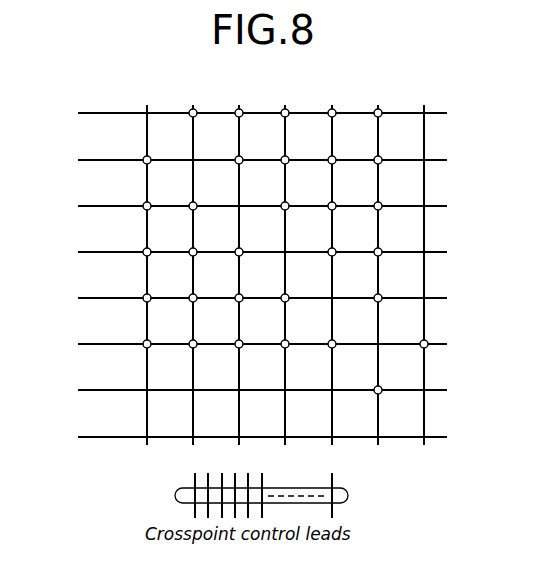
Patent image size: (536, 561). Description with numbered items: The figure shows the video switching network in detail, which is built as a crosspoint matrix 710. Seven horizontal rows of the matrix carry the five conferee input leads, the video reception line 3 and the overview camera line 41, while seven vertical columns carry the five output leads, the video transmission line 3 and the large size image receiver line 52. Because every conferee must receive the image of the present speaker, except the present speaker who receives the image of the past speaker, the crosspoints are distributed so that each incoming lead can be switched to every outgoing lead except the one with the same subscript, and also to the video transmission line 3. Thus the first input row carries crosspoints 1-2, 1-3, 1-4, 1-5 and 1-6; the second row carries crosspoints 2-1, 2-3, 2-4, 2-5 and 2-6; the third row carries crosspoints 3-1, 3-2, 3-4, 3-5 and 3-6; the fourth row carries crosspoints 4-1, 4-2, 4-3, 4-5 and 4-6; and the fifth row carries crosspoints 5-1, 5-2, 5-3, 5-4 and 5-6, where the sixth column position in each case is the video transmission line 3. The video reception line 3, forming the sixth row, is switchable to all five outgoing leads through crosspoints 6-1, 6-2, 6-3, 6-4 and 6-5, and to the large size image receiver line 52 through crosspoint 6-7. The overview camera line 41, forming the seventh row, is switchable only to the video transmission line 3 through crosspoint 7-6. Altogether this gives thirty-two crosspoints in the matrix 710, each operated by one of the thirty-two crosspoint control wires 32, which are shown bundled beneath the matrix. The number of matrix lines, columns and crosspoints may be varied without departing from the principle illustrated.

The crosspoint matrix 710 is at (414, 272).
The video reception and transmission line 3 is at (247, 261).
The overview camera line 41 is at (244, 390).
The large size image receiver line 52 is at (424, 261).
The crosspoint control wires 32 is at (348, 494).
The crosspoint 1-2 is at (205, 123).
The crosspoint 1-3 is at (251, 123).
The crosspoint 1-4 is at (297, 123).
The crosspoint 1-5 is at (344, 123).
The crosspoint 1-6 is at (390, 123).
The crosspoint 2-1 is at (159, 170).
The crosspoint 2-3 is at (251, 170).
The crosspoint 2-4 is at (297, 170).
The crosspoint 2-5 is at (344, 170).
The crosspoint 2-6 is at (390, 170).
The crosspoint 3-1 is at (159, 216).
The crosspoint 3-2 is at (205, 216).
The crosspoint 3-4 is at (297, 216).
The crosspoint 3-5 is at (344, 216).
The crosspoint 3-6 is at (390, 216).
The crosspoint 4-1 is at (159, 262).
The crosspoint 4-2 is at (205, 262).
The crosspoint 4-3 is at (251, 262).
The crosspoint 4-5 is at (344, 262).
The crosspoint 4-6 is at (390, 262).
The crosspoint 5-1 is at (159, 308).
The crosspoint 5-2 is at (205, 308).
The crosspoint 5-3 is at (251, 308).
The crosspoint 5-4 is at (297, 308).
The crosspoint 5-6 is at (390, 308).
The crosspoint 6-1 is at (159, 354).
The crosspoint 6-2 is at (205, 354).
The crosspoint 6-3 is at (251, 354).
The crosspoint 6-4 is at (297, 354).
The crosspoint 6-5 is at (344, 354).
The crosspoint 6-7 is at (437, 354).
The crosspoint 7-6 is at (390, 400).